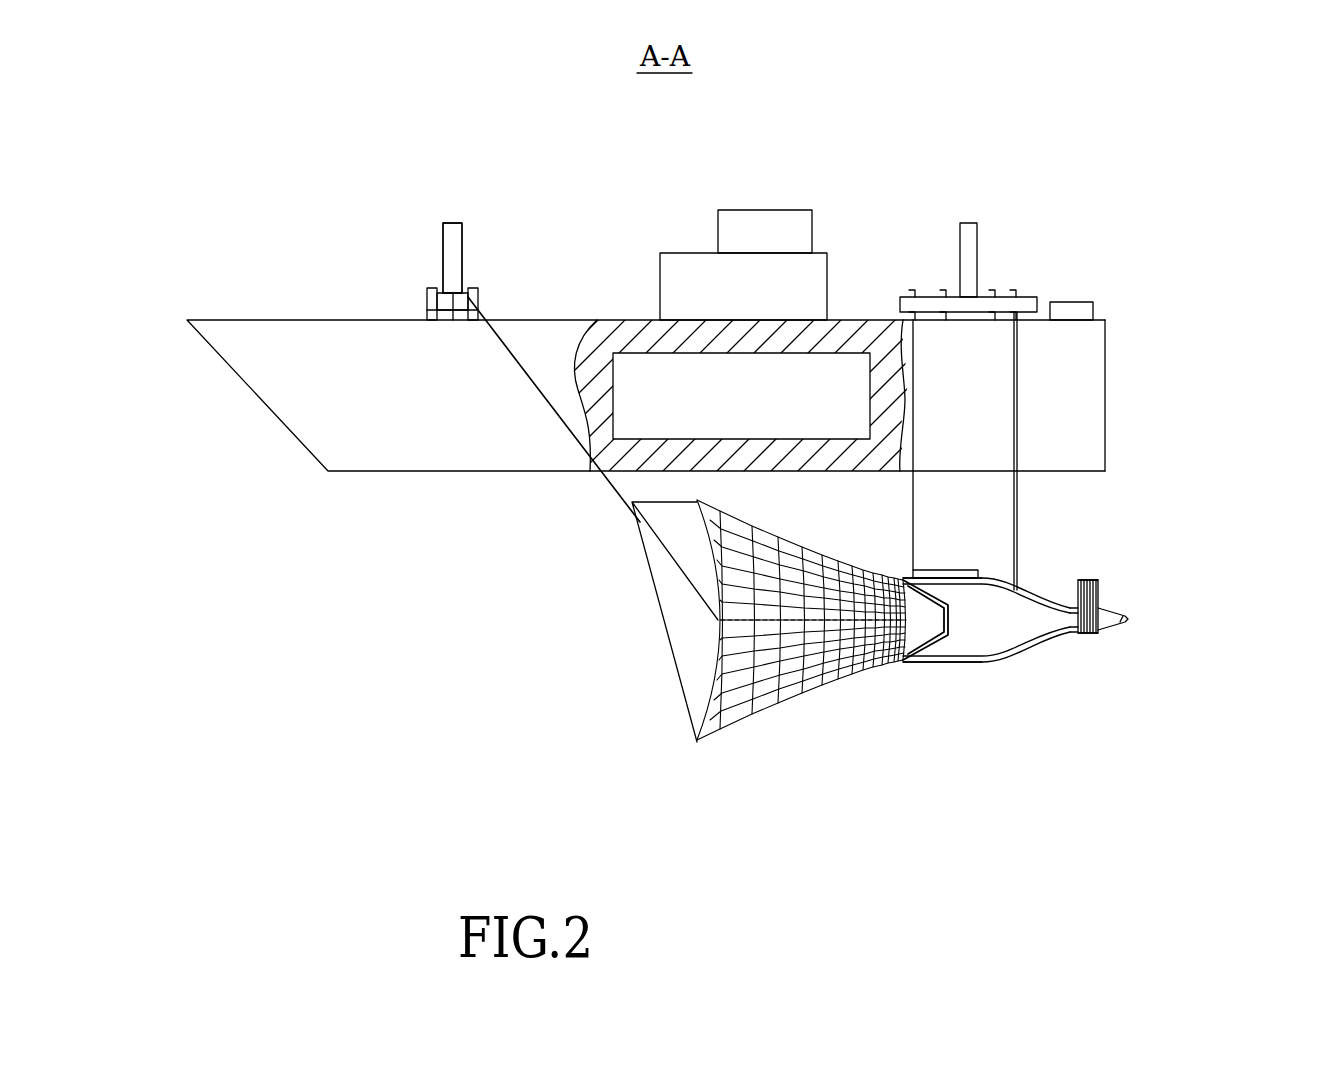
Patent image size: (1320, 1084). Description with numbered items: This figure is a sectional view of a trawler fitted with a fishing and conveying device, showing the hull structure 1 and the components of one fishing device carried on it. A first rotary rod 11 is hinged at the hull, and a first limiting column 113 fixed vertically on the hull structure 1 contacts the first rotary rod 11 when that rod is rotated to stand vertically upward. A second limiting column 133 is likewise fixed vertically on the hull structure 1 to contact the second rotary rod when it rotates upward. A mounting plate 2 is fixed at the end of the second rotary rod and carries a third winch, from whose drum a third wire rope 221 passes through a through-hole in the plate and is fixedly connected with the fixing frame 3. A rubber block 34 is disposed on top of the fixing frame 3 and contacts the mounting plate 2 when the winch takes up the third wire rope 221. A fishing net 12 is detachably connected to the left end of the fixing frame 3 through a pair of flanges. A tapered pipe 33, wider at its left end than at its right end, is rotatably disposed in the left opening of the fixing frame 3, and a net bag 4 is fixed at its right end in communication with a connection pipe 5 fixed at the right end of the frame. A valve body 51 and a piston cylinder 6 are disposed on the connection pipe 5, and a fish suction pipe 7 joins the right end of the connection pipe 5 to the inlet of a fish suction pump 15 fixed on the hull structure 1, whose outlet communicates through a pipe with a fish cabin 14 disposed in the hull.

The hull structure 1 is at (243, 320).
The first rotary rod 11 is at (437, 293).
The first limiting column 113 is at (462, 255).
The fish cabin 14 is at (650, 372).
The second limiting column 133 is at (960, 245).
The mounting plate 2 is at (1037, 312).
The fish suction pump 15 is at (1082, 302).
The third wire rope 221 is at (1015, 403).
The rubber block 34 is at (948, 570).
The tapered pipe 33 is at (930, 578).
The fishing net 12 is at (792, 700).
The fixing frame 3 is at (970, 680).
The net bag 4 is at (925, 663).
The connection pipe 5 is at (1090, 638).
The valve body 51 is at (1075, 598).
The piston cylinder 6 is at (1095, 592).
The fish suction pipe 7 is at (1118, 625).